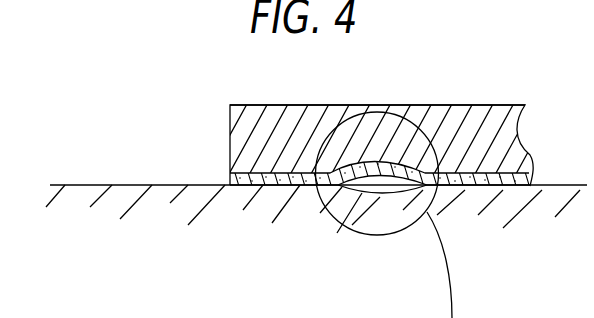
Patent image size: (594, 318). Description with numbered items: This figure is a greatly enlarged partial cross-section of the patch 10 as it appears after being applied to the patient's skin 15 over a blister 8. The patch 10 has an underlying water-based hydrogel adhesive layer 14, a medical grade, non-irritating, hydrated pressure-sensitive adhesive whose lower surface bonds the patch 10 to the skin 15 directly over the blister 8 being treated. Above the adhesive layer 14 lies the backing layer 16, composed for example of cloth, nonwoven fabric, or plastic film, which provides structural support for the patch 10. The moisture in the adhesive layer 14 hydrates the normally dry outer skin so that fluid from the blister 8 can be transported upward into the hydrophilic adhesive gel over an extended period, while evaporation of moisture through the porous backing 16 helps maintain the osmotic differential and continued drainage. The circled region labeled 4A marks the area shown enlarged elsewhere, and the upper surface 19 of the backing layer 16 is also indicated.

The patch 10 is at (358, 114).
The top surface of pad 19 is at (312, 103).
The backing layer 16 is at (243, 120).
The hydrogel adhesive layer 14 is at (270, 172).
The skin 15 is at (130, 185).
The blister 8 is at (341, 193).
The detail region shown in FIG. 4A is at (405, 110).